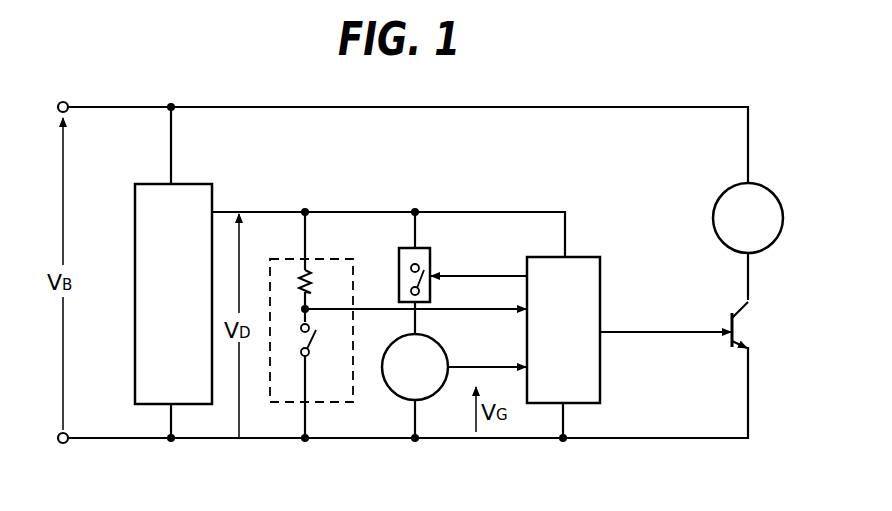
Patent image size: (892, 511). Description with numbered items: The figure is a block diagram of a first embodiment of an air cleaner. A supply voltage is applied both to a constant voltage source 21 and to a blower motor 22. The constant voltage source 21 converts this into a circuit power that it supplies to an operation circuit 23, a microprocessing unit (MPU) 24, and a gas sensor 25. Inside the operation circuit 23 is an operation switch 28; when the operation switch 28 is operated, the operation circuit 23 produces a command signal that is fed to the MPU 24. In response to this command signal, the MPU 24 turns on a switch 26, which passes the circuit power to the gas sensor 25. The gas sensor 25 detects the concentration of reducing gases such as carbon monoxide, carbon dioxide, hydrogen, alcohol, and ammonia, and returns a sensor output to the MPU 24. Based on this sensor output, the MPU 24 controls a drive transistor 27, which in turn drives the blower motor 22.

The constant voltage source 21 is at (197, 182).
The blower motor 22 is at (776, 190).
The operation circuit 23 is at (329, 262).
The microprocessing unit (MPU) 24 is at (589, 259).
The gas sensor 25 is at (443, 350).
The switch 26 is at (432, 262).
The drive transistor 27 is at (746, 334).
The operation switch 28 is at (320, 340).